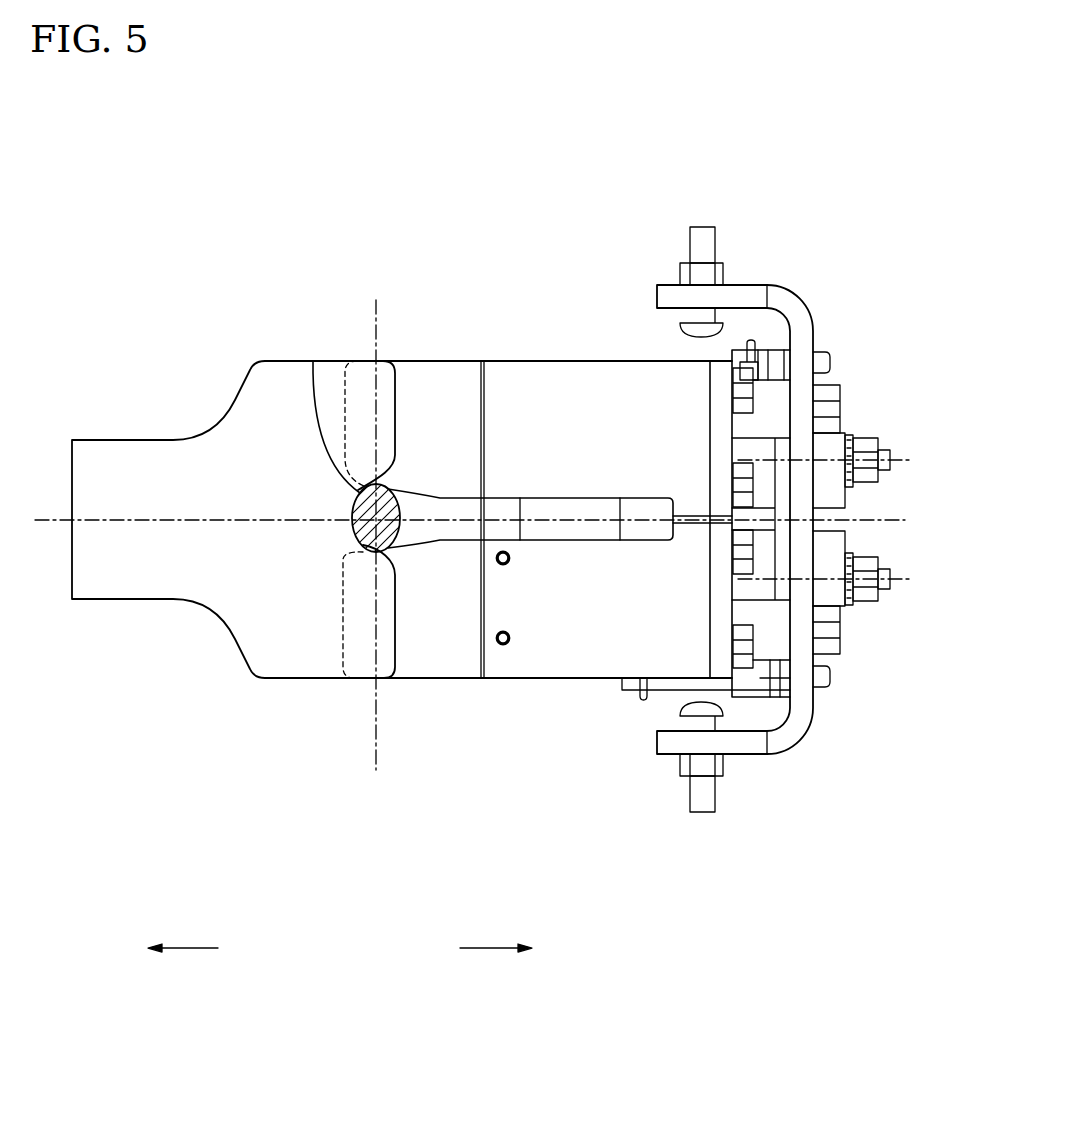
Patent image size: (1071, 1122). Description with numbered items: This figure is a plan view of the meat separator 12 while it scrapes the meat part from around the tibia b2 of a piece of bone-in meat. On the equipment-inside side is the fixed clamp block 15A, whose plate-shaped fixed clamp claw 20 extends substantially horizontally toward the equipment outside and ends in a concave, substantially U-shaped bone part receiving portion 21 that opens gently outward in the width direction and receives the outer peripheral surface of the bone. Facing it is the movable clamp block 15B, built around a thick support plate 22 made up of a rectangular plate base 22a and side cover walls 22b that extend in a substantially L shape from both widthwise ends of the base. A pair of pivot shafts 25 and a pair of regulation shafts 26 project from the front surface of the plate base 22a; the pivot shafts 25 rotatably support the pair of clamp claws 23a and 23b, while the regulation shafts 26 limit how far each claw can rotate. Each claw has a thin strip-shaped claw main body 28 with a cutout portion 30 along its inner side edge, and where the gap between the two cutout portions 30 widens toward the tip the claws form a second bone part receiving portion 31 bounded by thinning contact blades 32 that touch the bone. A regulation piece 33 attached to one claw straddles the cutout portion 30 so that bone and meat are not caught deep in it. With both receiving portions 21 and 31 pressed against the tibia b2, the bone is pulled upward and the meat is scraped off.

The meat separator 12 is at (587, 258).
The fixed clamp block 15A is at (246, 358).
The movable clamp block 15B is at (830, 290).
The fixed clamp claw 20 is at (312, 666).
The bone part receiving portion 21 is at (362, 545).
The support plate 22 is at (830, 709).
The plate base 22a is at (803, 628).
The side cover wall 22b is at (742, 297).
The clamp claw 23a is at (578, 696).
The clamp claw 23b is at (531, 348).
The pivot shaft 25 is at (893, 463).
The regulation shaft 26 is at (779, 403).
The claw main body 28 is at (598, 372).
The cutout portion 30 is at (553, 503).
The bone part receiving portion 31 is at (313, 361).
The contact blade 32 is at (398, 478).
The regulation piece 33 is at (492, 533).
The tibia b2 is at (400, 545).